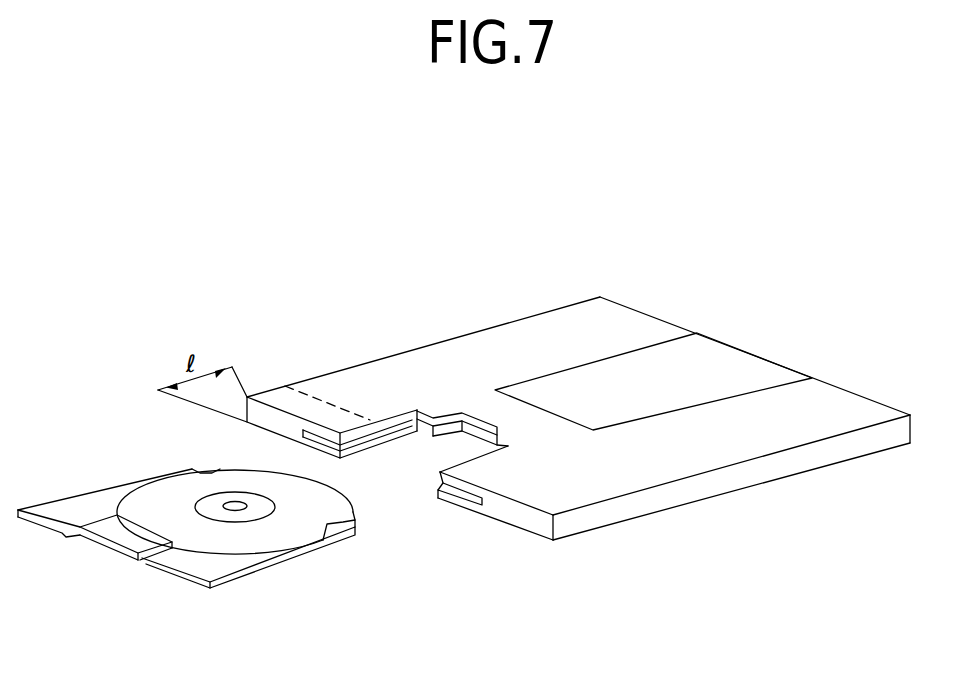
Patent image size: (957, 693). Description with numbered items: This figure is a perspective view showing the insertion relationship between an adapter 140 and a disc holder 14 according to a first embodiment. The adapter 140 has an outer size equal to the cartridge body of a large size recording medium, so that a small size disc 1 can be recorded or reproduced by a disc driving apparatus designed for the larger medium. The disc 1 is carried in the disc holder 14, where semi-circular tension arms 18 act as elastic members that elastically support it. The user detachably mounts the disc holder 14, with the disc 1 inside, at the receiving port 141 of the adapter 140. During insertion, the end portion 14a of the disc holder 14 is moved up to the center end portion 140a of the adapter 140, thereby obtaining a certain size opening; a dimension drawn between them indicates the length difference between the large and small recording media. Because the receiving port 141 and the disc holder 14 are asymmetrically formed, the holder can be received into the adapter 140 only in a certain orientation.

The disc 1 is at (343, 498).
The disc holder 14 is at (192, 565).
The end portion 14a is at (93, 543).
The tension arm 18 is at (343, 533).
The adapter 140 is at (558, 317).
The center end portion 140a is at (461, 410).
The receiving port 141 is at (436, 432).